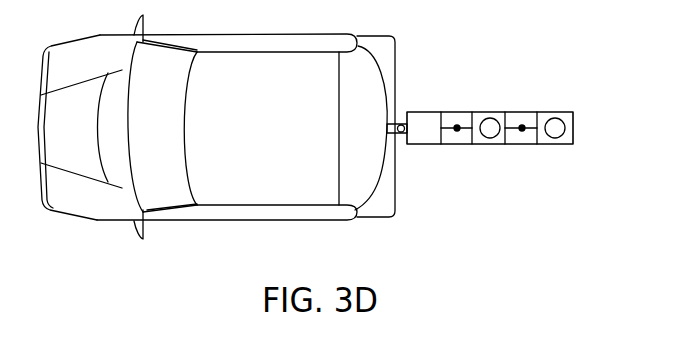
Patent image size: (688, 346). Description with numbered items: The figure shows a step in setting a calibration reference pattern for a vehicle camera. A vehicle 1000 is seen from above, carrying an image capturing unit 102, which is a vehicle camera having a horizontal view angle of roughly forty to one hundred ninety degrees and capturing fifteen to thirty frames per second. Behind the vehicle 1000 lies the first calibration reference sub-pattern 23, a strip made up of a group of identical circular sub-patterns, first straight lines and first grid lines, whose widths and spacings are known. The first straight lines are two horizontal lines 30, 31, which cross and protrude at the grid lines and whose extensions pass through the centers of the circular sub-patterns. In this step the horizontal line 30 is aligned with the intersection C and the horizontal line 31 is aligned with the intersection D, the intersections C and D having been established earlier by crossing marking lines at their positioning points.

The vehicle 1000 is at (282, 190).
The image capturing unit 102 is at (387, 129).
The first calibration reference sub-pattern 23 is at (510, 129).
The horizontal line 30 is at (457, 135).
The horizontal line 31 is at (522, 135).
The intersection C is at (457, 127).
The intersection D is at (522, 127).